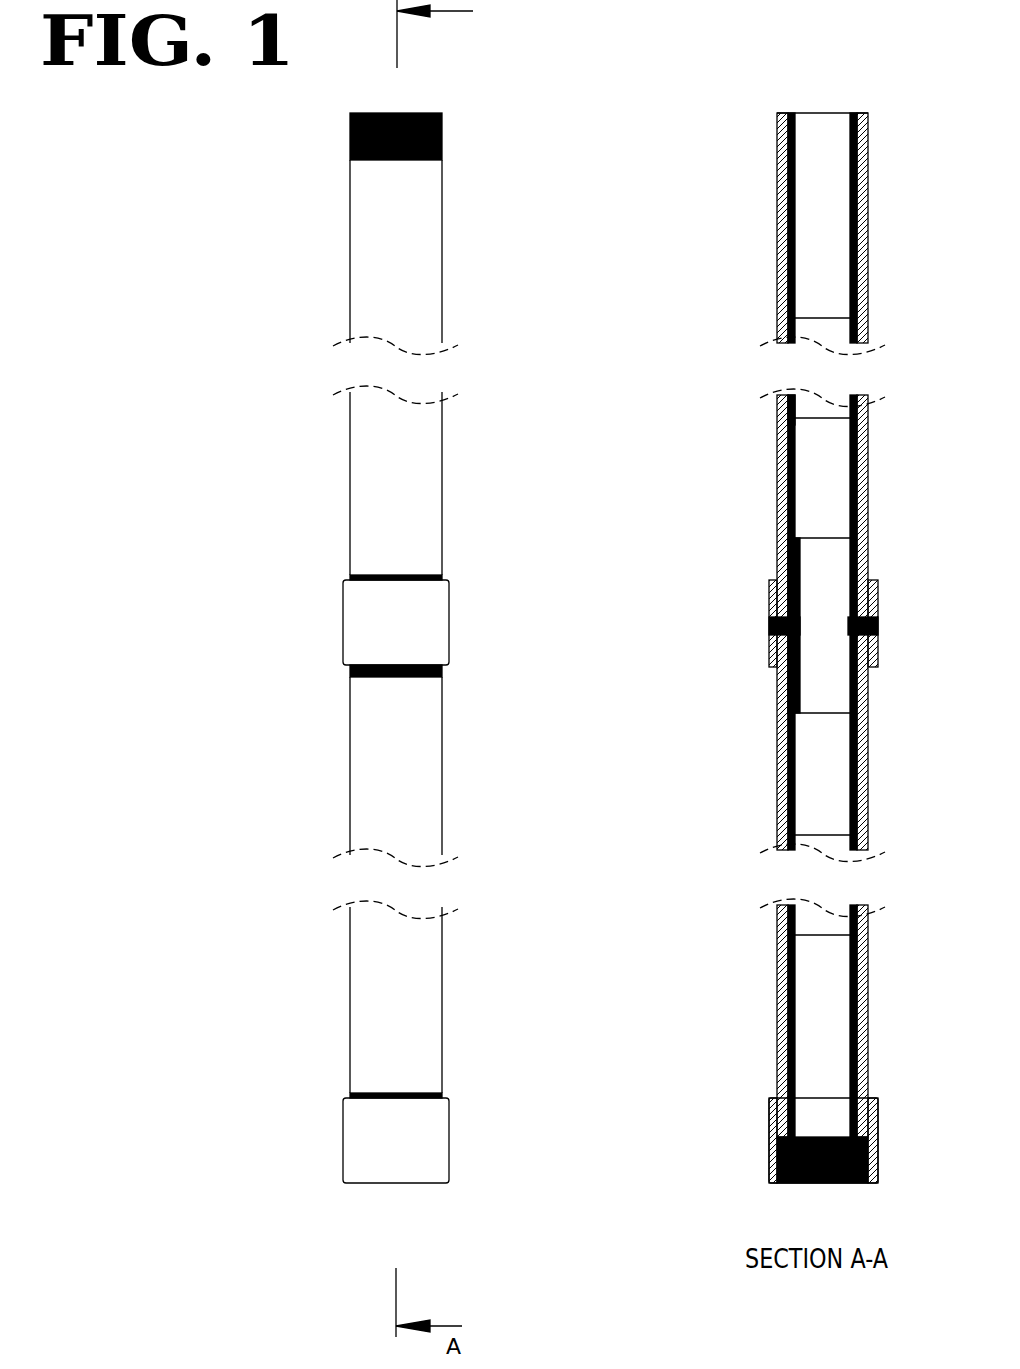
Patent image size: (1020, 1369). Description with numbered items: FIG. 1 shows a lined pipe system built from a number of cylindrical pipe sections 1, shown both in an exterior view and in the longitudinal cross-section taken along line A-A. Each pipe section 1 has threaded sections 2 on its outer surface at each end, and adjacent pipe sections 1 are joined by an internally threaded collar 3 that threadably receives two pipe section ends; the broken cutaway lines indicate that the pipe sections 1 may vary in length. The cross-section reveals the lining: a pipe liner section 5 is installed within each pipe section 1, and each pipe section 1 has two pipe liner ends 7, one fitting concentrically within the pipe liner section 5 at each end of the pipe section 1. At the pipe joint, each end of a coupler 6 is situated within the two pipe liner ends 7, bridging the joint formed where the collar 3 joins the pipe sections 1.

The pipe section 1 is at (445, 262).
The threaded section 2 is at (445, 135).
The internally threaded collar 3 is at (426, 637).
The pipe liner section 5 is at (808, 405).
The coupler 6 is at (820, 572).
The pipe liner end 7 is at (820, 200).